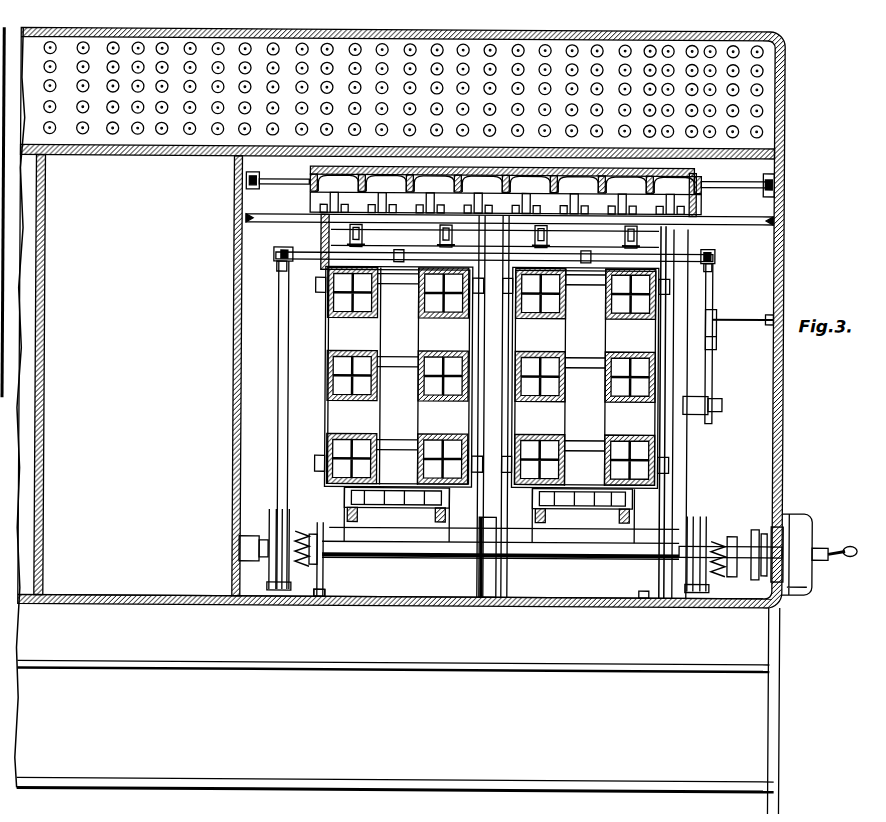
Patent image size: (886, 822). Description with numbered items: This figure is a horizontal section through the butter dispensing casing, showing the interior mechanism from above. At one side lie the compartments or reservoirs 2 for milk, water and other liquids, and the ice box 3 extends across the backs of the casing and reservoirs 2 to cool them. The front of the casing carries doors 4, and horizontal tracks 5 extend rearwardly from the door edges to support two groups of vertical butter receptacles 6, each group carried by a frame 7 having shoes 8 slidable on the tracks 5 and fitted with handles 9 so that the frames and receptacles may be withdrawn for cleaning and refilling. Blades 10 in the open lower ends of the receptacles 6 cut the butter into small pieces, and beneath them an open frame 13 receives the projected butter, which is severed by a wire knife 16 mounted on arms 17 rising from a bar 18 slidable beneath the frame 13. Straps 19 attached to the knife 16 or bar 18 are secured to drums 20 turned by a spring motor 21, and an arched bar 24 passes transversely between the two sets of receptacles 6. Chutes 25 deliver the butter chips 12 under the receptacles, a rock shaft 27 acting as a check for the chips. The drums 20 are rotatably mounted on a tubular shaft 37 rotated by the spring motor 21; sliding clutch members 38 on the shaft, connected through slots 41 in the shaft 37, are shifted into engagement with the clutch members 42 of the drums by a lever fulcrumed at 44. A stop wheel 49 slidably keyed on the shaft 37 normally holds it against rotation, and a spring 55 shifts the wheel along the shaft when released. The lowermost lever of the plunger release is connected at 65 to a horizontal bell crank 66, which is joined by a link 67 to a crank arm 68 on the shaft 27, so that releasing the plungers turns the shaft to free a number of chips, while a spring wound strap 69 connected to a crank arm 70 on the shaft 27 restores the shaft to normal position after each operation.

The compartments or reservoirs 2 is at (94, 375).
The ice box 3 is at (770, 112).
The doors 4 is at (400, 604).
The horizontal tracks 5 is at (348, 600).
The butter receptacles 6 is at (318, 288).
The frame 7 is at (280, 272).
The shoes 8 is at (289, 300).
The handles 9 is at (425, 512).
The blades 10 is at (425, 445).
The butter chips 12 is at (256, 180).
The open frame 13 is at (330, 347).
The wire or knife 16 is at (275, 254).
The arms 17 is at (283, 264).
The bar 18 is at (278, 250).
The straps 19 is at (707, 455).
The drums 20 is at (262, 598).
The spring motor 21 is at (815, 522).
The arched bar 24 is at (482, 603).
The chutes 25 is at (248, 190).
The rock shaft 27 is at (776, 176).
The tubular shaft 37 is at (630, 562).
The sliding clutch members 38 is at (318, 558).
The slots 41 is at (314, 590).
The clutch members 42 is at (300, 588).
The fulcrum 44 is at (750, 530).
The stop wheel 49 is at (784, 512).
The spring 55 is at (840, 550).
The connection 65 is at (718, 332).
The horizontal bell crank 66 is at (740, 318).
The link 67 is at (713, 278).
The crank arm 68 is at (760, 150).
The spring wound strap 69 is at (722, 406).
The crank arm 70 is at (706, 203).